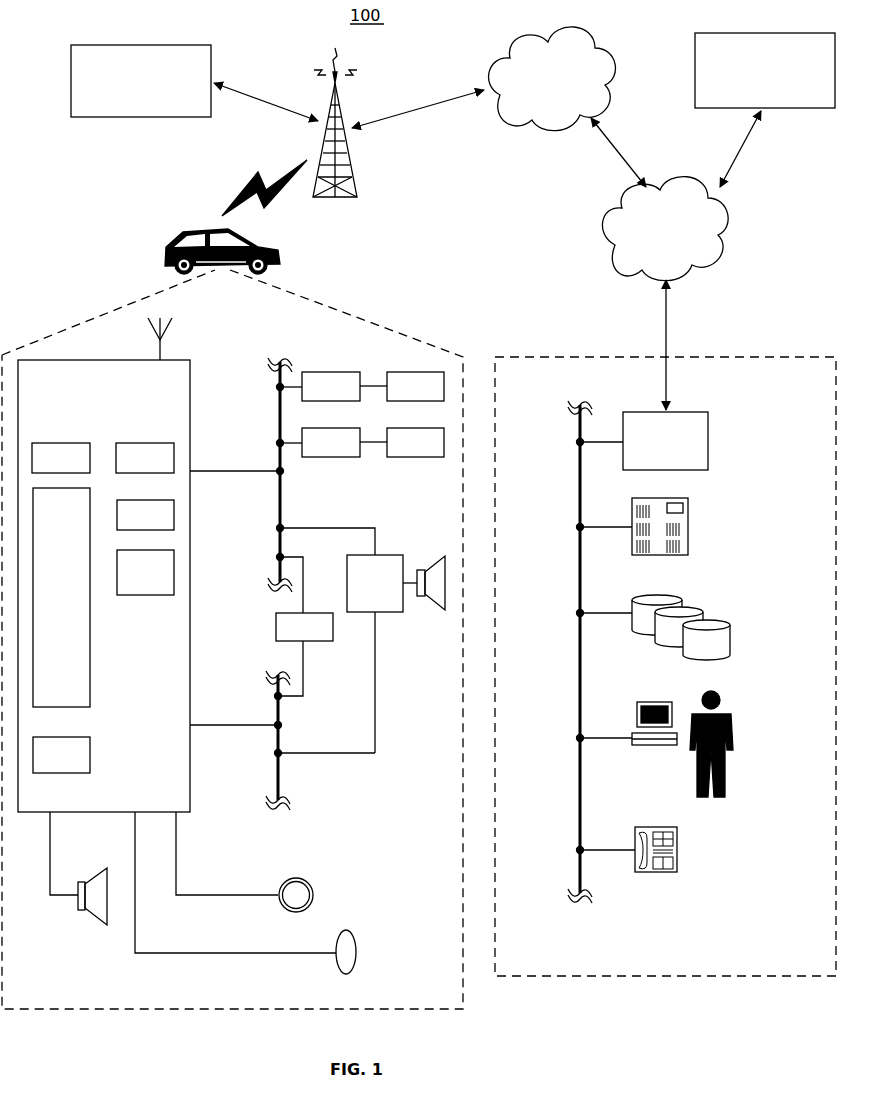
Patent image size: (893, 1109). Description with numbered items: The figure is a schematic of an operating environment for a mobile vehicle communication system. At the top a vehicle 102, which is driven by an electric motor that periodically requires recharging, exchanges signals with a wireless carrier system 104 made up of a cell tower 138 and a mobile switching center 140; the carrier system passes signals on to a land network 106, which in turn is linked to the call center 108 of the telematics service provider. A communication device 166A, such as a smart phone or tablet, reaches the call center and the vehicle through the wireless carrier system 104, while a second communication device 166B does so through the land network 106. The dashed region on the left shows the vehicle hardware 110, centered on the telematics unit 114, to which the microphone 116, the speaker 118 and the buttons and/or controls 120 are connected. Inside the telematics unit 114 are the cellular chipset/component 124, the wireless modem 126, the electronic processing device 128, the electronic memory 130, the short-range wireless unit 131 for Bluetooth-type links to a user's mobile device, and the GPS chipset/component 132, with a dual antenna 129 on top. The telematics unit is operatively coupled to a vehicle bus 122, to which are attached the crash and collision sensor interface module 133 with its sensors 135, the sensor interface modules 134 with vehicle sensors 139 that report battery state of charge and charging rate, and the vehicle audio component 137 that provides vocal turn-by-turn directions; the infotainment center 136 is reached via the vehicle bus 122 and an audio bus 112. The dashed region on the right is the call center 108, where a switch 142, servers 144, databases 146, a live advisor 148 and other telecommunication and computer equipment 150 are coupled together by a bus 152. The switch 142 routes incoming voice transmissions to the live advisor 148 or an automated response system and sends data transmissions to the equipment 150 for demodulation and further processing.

The vehicle 102 is at (172, 250).
The wireless carrier system 104 is at (458, 186).
The land network 106 is at (665, 229).
The call center 108 is at (672, 978).
The vehicle hardware 110 is at (193, 1010).
The audio bus 112 is at (275, 775).
The telematics unit 114 is at (190, 668).
The microphone 116 is at (350, 930).
The speaker 118 is at (90, 918).
The buttons and/or controls 120 is at (294, 878).
The vehicle bus 122 is at (283, 513).
The cellular chipset/component 124 is at (61, 458).
The wireless modem 126 is at (145, 458).
The electronic processing device 128 is at (61, 597).
The dual antenna 129 is at (160, 352).
The electronic memory 130 is at (61, 755).
The short-range wireless unit 131 is at (145, 572).
The GPS chipset/component 132 is at (145, 515).
The crash and/or collision sensor interface module 133 is at (331, 386).
The sensor interface module 134 is at (331, 442).
The sensor 135 is at (402, 386).
The infotainment center 136 is at (304, 654).
The vehicle audio component 137 is at (396, 640).
The cell tower 138 is at (342, 108).
The vehicle sensor 139 is at (402, 442).
The mobile switching center 140 is at (552, 79).
The switch 142 is at (665, 441).
The server 144 is at (690, 500).
The database 146 is at (705, 605).
The live advisor 148 is at (727, 712).
The telecommunication and computer equipment 150 is at (680, 843).
The bus 152 is at (578, 668).
The communication device 166A is at (141, 81).
The communication device 166B is at (765, 70).